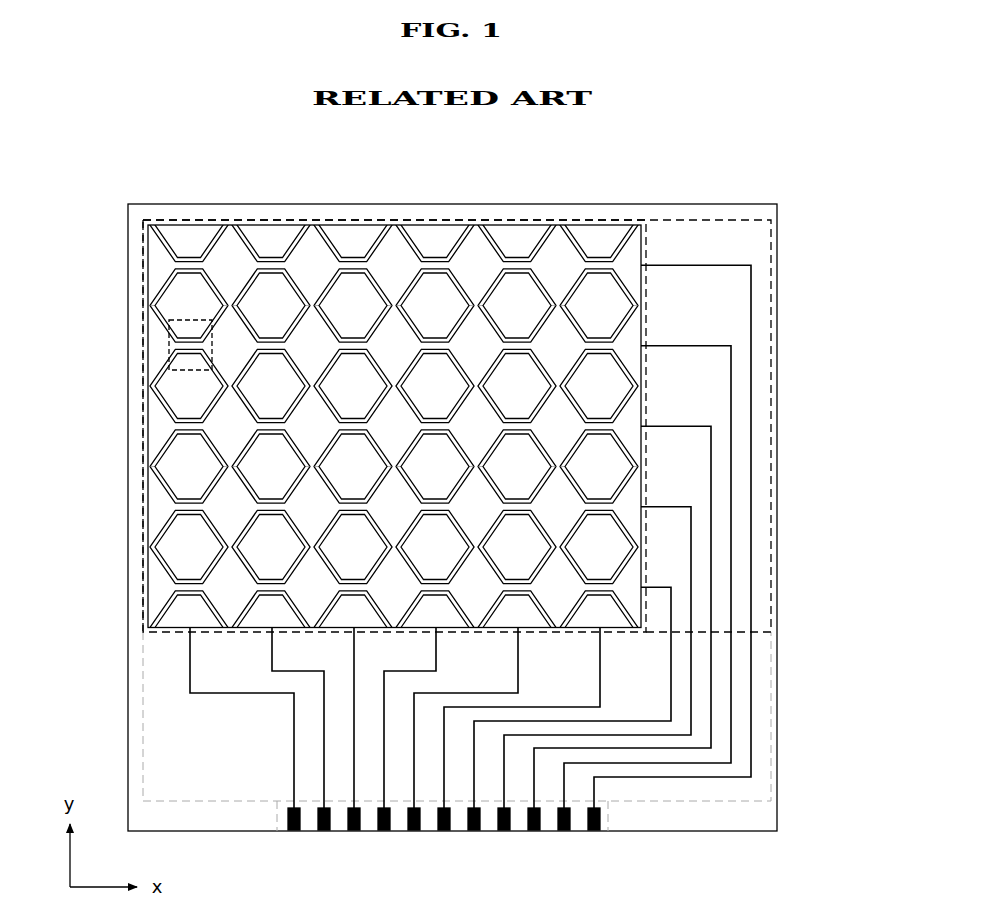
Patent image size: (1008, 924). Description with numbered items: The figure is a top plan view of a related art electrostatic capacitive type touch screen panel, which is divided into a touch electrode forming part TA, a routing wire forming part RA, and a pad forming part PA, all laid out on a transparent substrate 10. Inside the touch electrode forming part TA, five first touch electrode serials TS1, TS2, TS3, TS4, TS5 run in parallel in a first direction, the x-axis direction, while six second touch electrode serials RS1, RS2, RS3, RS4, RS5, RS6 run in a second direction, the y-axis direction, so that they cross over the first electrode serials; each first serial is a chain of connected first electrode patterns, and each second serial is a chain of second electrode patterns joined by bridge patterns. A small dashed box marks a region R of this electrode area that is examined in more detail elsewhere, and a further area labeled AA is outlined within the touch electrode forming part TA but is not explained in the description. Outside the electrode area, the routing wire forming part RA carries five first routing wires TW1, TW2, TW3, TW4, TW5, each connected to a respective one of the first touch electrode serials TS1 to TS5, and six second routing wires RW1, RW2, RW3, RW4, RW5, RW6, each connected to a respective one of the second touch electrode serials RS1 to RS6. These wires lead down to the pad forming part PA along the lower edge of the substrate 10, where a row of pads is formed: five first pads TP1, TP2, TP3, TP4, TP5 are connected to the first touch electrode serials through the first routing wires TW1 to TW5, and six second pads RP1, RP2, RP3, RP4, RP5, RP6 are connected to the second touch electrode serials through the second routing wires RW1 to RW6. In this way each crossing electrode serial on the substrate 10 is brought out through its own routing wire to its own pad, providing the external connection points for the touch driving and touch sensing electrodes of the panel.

The transparent substrate 10 is at (742, 820).
The routing wire forming part RA is at (701, 209).
The touch electrode forming part TA is at (473, 209).
The active area AA is at (556, 228).
The pad forming part PA is at (617, 816).
The region R is at (172, 321).
The first touch electrode serial TS1 is at (160, 265).
The first touch electrode serial TS2 is at (160, 346).
The first touch electrode serial TS3 is at (160, 426).
The first touch electrode serial TS4 is at (160, 507).
The first touch electrode serial TS5 is at (160, 587).
The second touch electrode serial RS1 is at (188, 232).
The second touch electrode serial RS2 is at (270, 232).
The second touch electrode serial RS3 is at (352, 232).
The second touch electrode serial RS4 is at (434, 232).
The second touch electrode serial RS5 is at (516, 232).
The second touch electrode serial RS6 is at (598, 232).
The first routing wire TW1 is at (752, 286).
The first routing wire TW2 is at (732, 378).
The first routing wire TW3 is at (712, 459).
The first routing wire TW4 is at (692, 538).
The first routing wire TW5 is at (672, 604).
The second routing wire RW1 is at (192, 677).
The second routing wire RW2 is at (271, 649).
The second routing wire RW3 is at (353, 650).
The second routing wire RW4 is at (437, 650).
The second routing wire RW5 is at (519, 650).
The second routing wire RW6 is at (601, 650).
The second pad RP1 is at (294, 832).
The second pad RP2 is at (324, 832).
The second pad RP3 is at (354, 832).
The second pad RP4 is at (384, 832).
The second pad RP5 is at (414, 832).
The second pad RP6 is at (444, 832).
The first pad TP1 is at (474, 832).
The first pad TP2 is at (504, 832).
The first pad TP3 is at (534, 832).
The first pad TP4 is at (564, 832).
The first pad TP5 is at (594, 832).